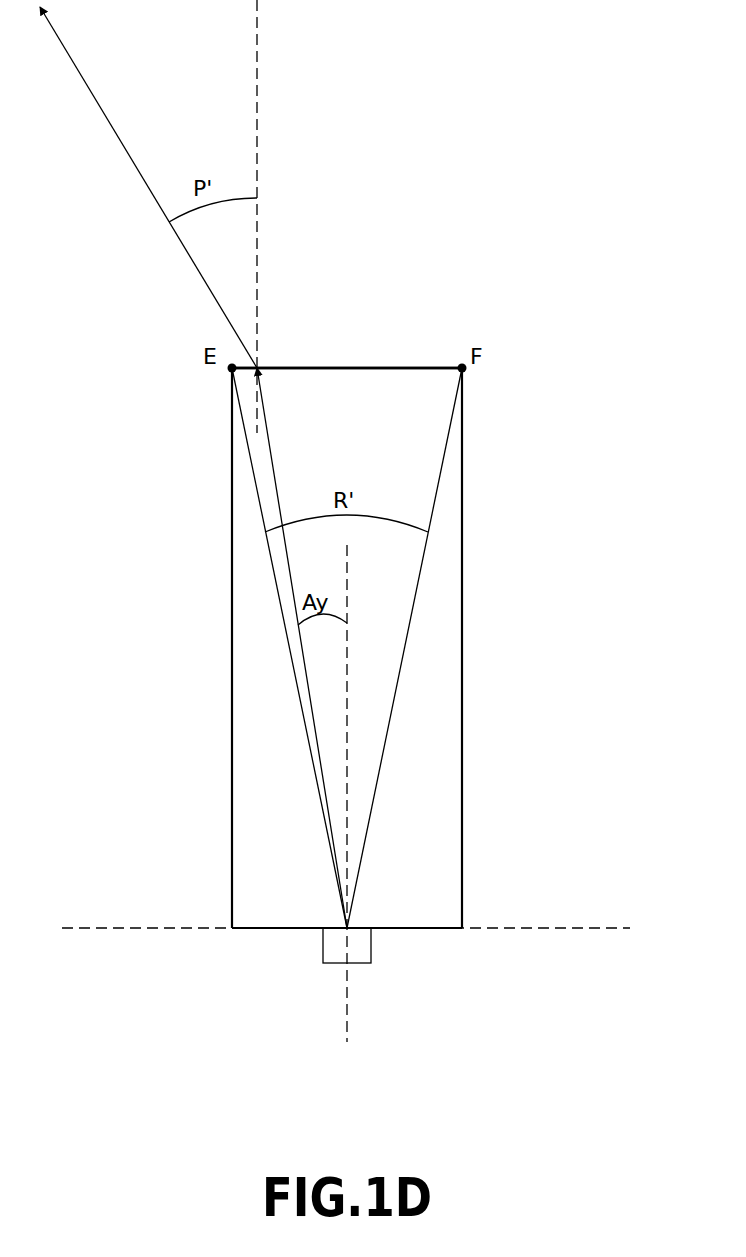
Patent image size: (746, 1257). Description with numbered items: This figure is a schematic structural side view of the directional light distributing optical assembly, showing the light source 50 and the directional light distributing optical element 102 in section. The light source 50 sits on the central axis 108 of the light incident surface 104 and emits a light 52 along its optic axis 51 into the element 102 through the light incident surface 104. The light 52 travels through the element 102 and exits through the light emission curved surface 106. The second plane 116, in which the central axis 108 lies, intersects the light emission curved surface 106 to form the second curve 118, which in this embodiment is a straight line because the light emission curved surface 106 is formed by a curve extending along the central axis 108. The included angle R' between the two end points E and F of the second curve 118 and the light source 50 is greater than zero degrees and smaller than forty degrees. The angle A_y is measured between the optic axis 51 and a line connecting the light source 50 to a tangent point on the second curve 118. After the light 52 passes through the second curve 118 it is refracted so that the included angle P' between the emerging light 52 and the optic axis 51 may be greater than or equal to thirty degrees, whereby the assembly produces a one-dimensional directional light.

The light source 50 is at (333, 950).
The optic axis 51 is at (346, 985).
The light 52 is at (137, 171).
The directional light distributing optical element 102 is at (487, 581).
The light incident surface 104 is at (423, 931).
The light emission curved surface 106 is at (349, 366).
The central axis 108 is at (561, 925).
The second plane 116 is at (417, 757).
The second curve 118 is at (390, 367).